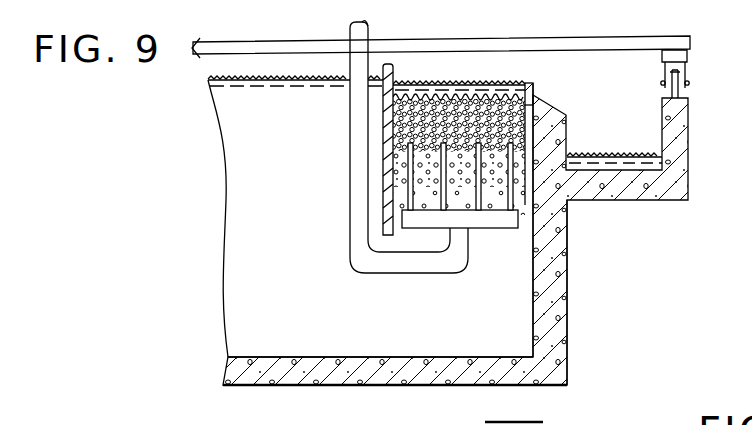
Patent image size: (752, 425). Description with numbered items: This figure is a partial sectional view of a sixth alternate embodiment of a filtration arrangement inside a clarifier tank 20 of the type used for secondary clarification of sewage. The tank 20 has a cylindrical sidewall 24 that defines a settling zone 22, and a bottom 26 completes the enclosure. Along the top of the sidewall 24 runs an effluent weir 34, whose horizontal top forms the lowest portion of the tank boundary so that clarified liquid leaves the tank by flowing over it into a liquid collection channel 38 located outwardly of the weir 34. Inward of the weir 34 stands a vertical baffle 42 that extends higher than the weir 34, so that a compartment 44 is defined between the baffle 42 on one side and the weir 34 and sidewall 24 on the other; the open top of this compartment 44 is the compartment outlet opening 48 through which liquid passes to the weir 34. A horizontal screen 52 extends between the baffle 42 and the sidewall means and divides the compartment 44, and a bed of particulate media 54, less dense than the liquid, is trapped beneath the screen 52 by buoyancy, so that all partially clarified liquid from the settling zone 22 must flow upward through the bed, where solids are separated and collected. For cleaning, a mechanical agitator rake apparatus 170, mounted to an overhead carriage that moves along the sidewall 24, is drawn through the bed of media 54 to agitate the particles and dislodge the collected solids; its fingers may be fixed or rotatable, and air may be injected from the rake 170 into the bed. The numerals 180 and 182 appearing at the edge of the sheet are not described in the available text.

The clarifier tank 20 is at (603, 260).
The settling zone 22 is at (287, 333).
The sidewall 24 is at (568, 278).
The bottom 26 is at (310, 387).
The effluent weir 34 is at (533, 93).
The liquid collection channel 38 is at (618, 146).
The vertical baffle 42 is at (372, 228).
The compartment 44 is at (492, 165).
The compartment outlet opening 48 is at (463, 88).
The screen 52 is at (410, 93).
The particulate media 54 is at (383, 146).
The mechanical agitator rake apparatus 170 is at (408, 185).
The element of adjacent figure 180 is at (655, 416).
The element of adjacent figure 182 is at (585, 416).